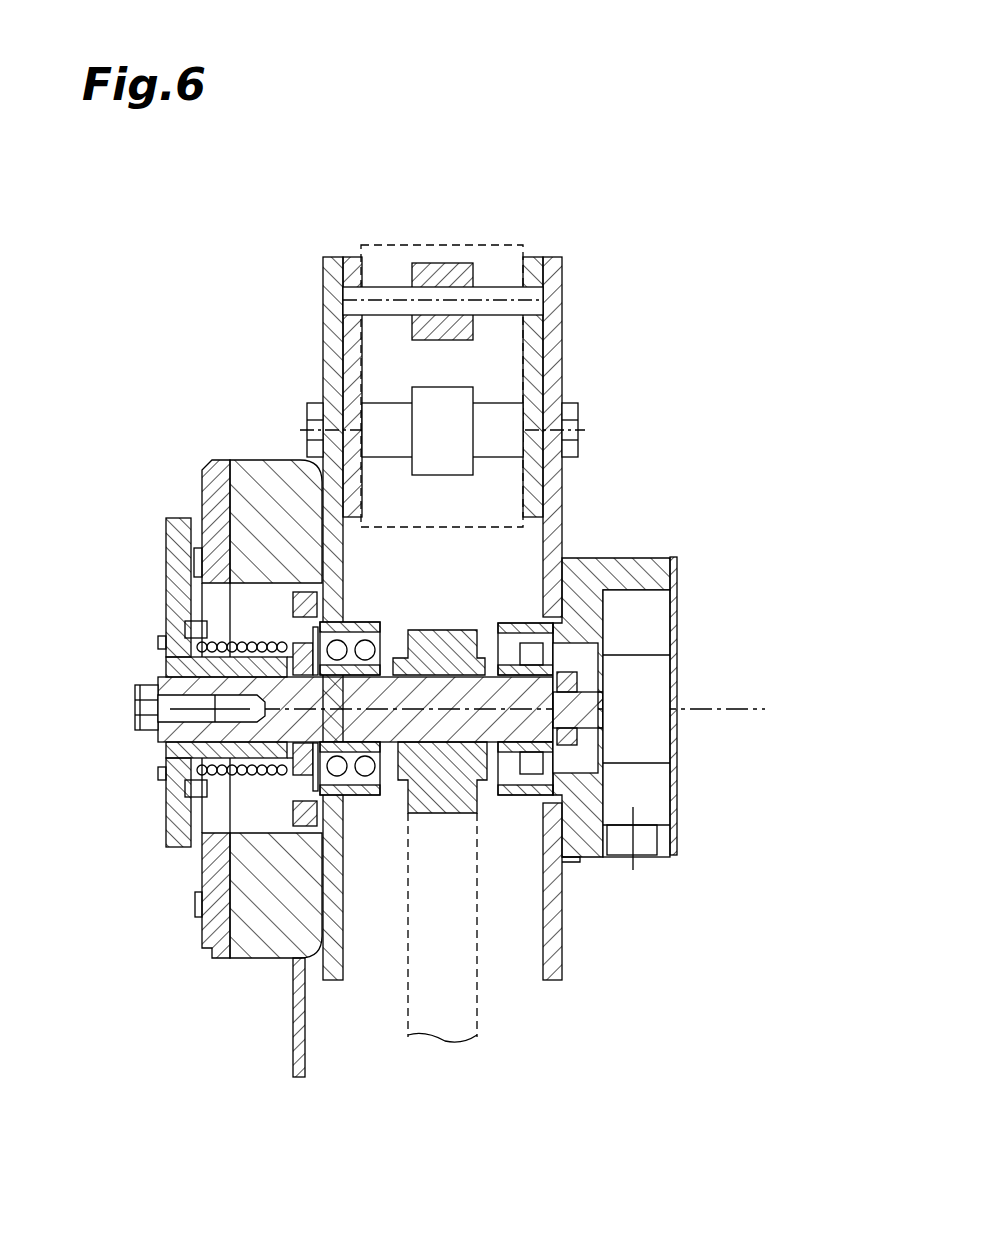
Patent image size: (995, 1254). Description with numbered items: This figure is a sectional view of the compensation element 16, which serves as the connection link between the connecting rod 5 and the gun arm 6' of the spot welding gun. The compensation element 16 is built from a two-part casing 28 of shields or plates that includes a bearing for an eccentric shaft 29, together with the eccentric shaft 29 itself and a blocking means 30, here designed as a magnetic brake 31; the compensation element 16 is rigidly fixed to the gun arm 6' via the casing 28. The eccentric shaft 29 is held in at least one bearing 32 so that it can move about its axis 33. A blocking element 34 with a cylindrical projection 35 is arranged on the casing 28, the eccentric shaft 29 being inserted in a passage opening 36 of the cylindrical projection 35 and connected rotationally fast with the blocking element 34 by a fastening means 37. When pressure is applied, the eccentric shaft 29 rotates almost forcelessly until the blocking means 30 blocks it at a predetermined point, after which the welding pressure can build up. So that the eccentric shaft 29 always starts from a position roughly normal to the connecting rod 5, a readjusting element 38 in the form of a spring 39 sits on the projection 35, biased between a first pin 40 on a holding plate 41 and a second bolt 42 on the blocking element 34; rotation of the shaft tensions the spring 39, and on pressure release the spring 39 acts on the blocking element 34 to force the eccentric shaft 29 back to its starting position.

The connecting rod 5 is at (448, 968).
The gun arm 6' is at (439, 310).
The compensation element 16 is at (602, 215).
The casing 28 is at (324, 342).
The eccentric shaft 29 is at (575, 737).
The blocking means 30 is at (162, 957).
The magnetic brake 31 is at (267, 923).
The bearing 32 is at (357, 795).
The axis 33 is at (707, 707).
The blocking element 34 is at (178, 518).
The cylindrical projection 35 is at (193, 773).
The passage opening 36 is at (170, 743).
The fastening means 37 is at (137, 705).
The readjusting element 38 is at (212, 630).
The spring 39 is at (167, 647).
The first pin 40 is at (283, 625).
The holding plate 41 is at (202, 878).
The second bolt 42 is at (168, 820).